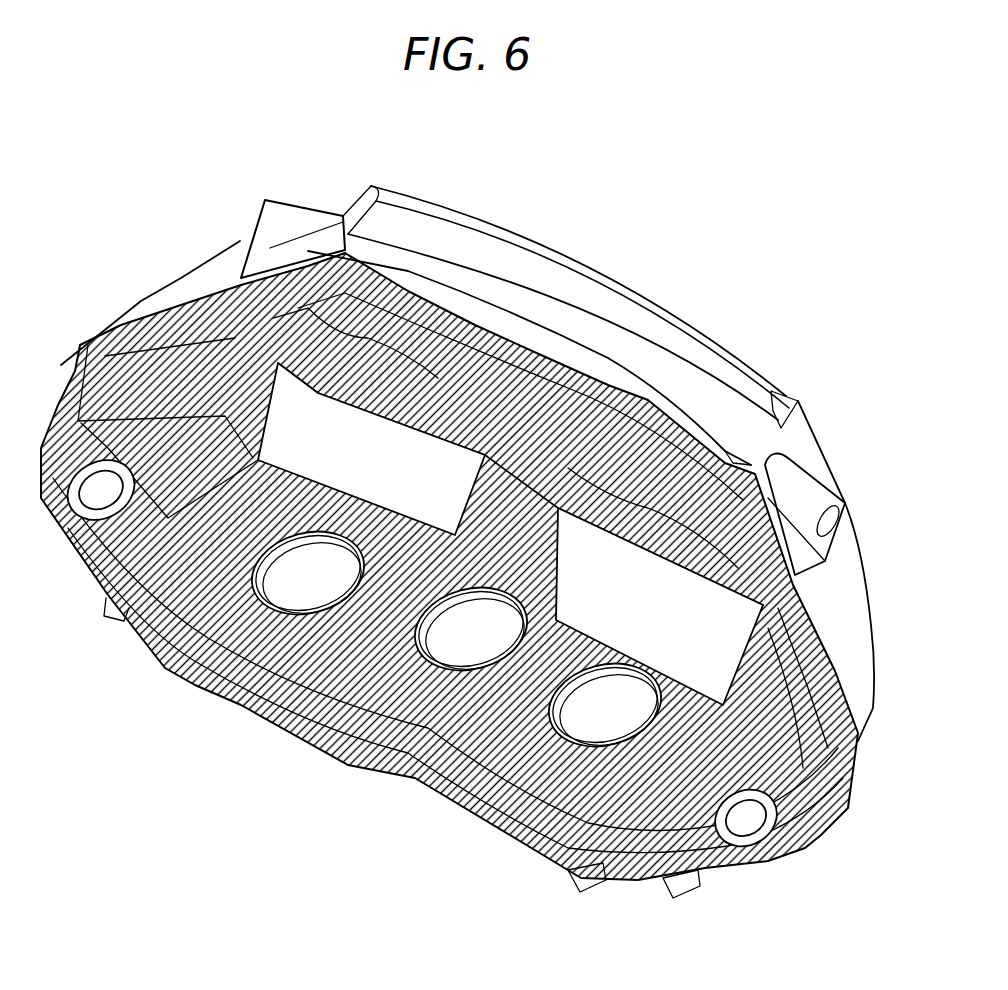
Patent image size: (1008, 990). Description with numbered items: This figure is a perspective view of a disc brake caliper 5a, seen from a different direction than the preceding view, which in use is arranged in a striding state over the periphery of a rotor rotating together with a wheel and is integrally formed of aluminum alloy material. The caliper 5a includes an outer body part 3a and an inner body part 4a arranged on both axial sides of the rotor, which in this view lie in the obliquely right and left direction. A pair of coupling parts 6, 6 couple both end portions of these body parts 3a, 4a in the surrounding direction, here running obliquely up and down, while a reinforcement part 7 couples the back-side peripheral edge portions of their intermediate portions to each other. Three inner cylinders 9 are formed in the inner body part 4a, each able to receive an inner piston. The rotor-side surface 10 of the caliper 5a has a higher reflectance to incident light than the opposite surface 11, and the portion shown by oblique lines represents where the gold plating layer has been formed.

The outer body part 3a is at (677, 367).
The inner body part 4a is at (400, 690).
The disc brake caliper 5a is at (778, 248).
The coupling part 6 is at (50, 368).
The reinforcement part 7 is at (522, 510).
The inner cylinder 9 is at (300, 565).
The rotor-side surface 10 is at (465, 660).
The opposite surface 11 is at (560, 313).